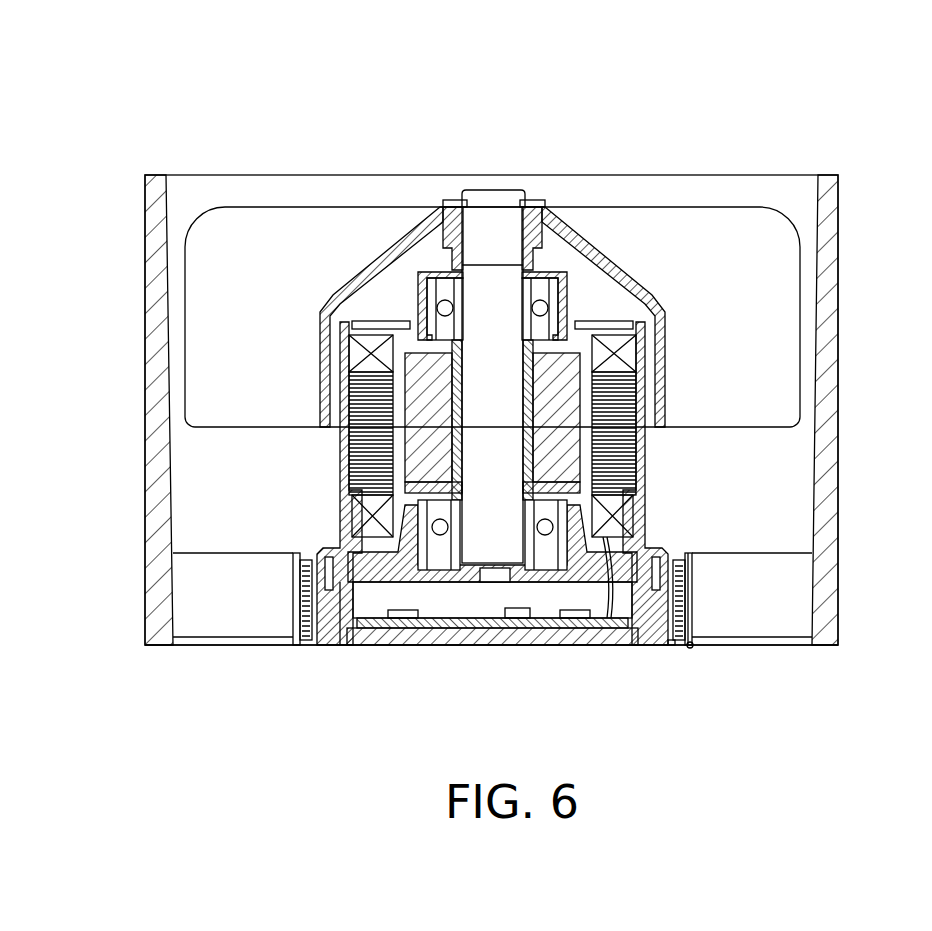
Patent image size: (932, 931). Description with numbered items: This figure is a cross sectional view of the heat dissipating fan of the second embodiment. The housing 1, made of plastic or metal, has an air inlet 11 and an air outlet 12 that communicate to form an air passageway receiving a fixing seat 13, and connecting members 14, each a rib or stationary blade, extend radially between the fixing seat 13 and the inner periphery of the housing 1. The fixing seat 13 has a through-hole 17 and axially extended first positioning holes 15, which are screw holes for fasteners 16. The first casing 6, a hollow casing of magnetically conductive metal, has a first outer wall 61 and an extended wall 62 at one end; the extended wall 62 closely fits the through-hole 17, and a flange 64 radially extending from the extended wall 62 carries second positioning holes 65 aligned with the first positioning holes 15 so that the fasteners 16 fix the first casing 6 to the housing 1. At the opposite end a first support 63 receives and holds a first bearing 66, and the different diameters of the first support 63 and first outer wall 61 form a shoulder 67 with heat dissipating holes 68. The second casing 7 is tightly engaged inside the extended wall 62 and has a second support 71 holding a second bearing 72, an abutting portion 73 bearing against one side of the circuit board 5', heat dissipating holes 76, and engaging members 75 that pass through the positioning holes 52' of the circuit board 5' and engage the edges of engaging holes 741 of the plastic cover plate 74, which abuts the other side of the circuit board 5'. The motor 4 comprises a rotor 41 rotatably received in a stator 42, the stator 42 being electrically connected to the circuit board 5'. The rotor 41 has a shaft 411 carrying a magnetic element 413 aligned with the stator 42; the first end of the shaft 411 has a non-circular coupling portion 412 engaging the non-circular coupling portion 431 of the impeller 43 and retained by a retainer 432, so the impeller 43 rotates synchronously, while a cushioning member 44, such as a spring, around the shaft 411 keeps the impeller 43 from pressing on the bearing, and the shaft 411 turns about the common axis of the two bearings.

The housing 1 is at (221, 124).
The air inlet 11 is at (193, 173).
The air outlet 12 is at (190, 647).
The fixing seat 13 is at (293, 552).
The connecting member 14 is at (208, 555).
The first positioning hole 15 is at (690, 565).
The fastener 16 is at (685, 590).
The through-hole 17 is at (695, 612).
The motor 4 is at (61, 193).
The rotor 41 is at (430, 365).
The shaft 411 is at (510, 572).
The coupling portion 412 is at (487, 225).
The magnetic element 413 is at (567, 407).
The stator 42 is at (385, 325).
The impeller 43 is at (376, 208).
The non-circular coupling portion 431 is at (466, 200).
The retainer 432 is at (535, 205).
The cushioning member 44 is at (443, 647).
The circuit board 5' is at (399, 686).
The positioning hole 52' is at (451, 627).
The first casing 6 is at (666, 500).
The first outer wall 61 is at (645, 470).
The extended wall 62 is at (300, 570).
The first support 63 is at (632, 335).
The flange 64 is at (700, 650).
The second positioning hole 65 is at (676, 650).
The first bearing 66 is at (567, 300).
The shoulder 67 is at (657, 317).
The heat dissipating hole 68 is at (350, 323).
The second casing 7 is at (385, 647).
The second support 71 is at (365, 647).
The second bearing 72 is at (572, 582).
The abutting portion 73 is at (610, 612).
The cover plate 74 is at (462, 647).
The engaging hole 741 is at (656, 648).
The engaging member 75 is at (342, 648).
The heat dissipating hole 76 is at (590, 622).